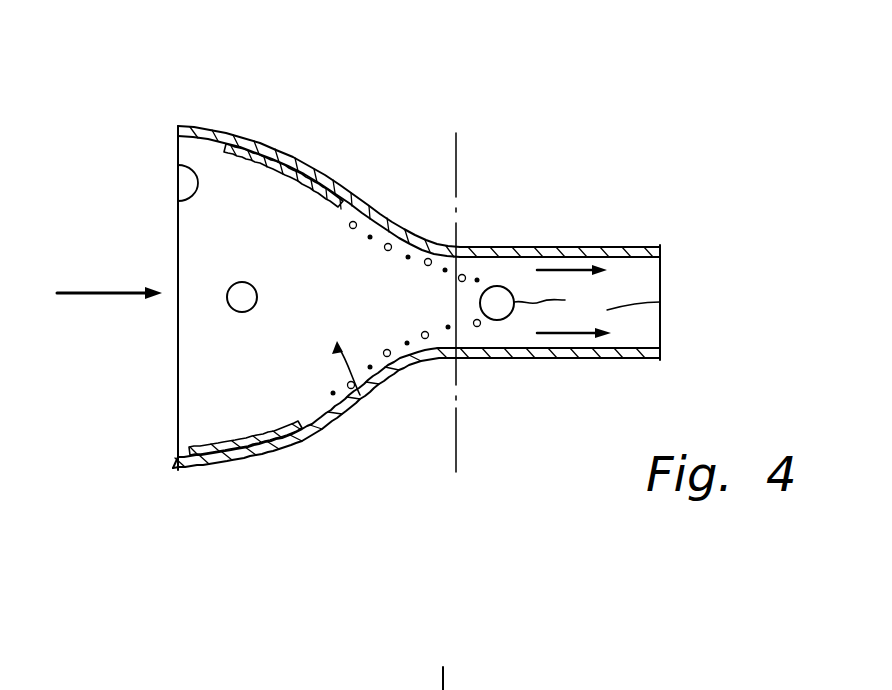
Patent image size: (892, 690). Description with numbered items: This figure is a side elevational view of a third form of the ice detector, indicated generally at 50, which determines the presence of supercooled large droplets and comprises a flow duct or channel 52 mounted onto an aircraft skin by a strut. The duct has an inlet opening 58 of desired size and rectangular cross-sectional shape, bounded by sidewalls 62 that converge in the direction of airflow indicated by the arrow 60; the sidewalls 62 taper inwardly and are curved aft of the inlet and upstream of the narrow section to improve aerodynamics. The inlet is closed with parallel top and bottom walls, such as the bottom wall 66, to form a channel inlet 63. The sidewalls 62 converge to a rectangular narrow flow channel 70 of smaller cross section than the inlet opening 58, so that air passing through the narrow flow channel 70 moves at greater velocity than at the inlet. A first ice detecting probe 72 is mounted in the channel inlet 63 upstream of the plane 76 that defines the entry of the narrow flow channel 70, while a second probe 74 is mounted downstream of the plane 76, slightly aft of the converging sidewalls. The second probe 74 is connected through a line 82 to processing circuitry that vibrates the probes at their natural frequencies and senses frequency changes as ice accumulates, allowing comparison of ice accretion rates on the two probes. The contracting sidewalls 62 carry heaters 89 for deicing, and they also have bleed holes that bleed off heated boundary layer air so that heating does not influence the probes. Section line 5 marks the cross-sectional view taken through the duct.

The section line 5- 5 is at (152, 88).
The ice detector 50 is at (538, 240).
The flow duct 52 is at (571, 358).
The inlet opening 58 is at (178, 165).
The arrow indicating airflow direction 60 is at (261, 456).
The sidewalls 62 is at (309, 159).
The channel inlet 63 is at (349, 379).
The bottom wall 66 is at (207, 387).
The narrow flow channel 70 is at (660, 302).
The first ice detecting probe 72 is at (253, 285).
The second probe 74 is at (505, 318).
The plane 76 is at (455, 175).
The line 82 is at (561, 302).
The heaters 89 is at (254, 174).